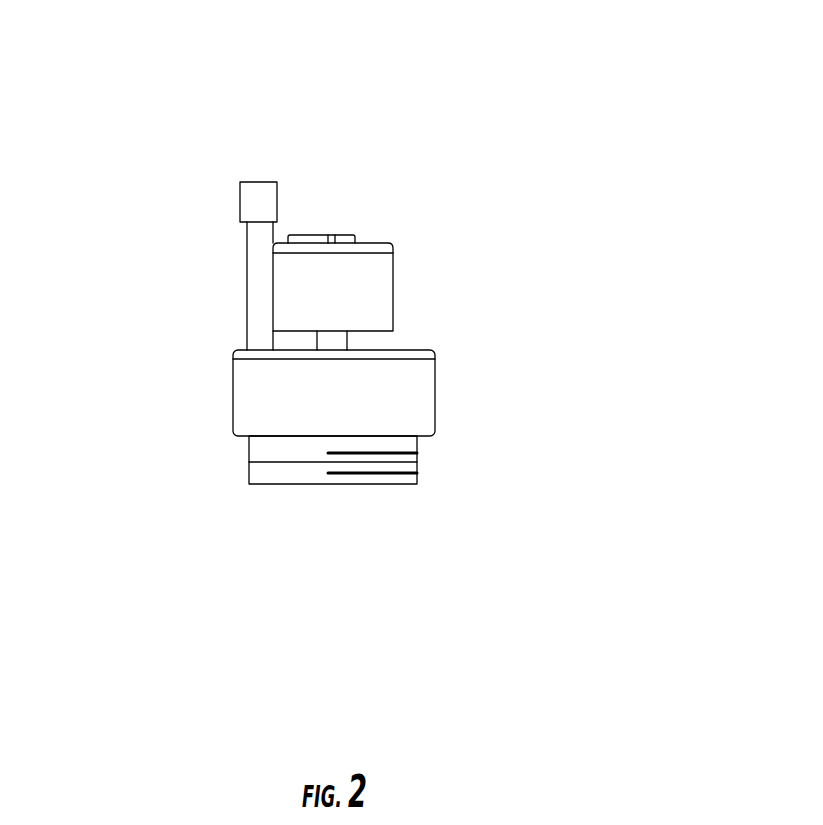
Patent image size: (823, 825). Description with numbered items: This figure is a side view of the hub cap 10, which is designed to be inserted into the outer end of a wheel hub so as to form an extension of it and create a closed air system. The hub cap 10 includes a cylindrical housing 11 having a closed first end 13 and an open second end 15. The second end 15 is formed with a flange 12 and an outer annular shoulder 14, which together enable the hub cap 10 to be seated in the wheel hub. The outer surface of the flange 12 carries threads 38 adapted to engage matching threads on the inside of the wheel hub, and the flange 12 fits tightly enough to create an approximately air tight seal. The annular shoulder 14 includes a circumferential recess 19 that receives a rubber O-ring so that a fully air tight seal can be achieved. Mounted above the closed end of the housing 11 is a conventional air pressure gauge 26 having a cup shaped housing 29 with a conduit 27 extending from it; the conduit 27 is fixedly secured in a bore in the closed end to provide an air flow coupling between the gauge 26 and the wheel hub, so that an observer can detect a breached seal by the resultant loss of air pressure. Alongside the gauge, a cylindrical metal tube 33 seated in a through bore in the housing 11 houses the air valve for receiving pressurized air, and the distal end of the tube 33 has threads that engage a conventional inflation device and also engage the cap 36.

The hub cap 10 is at (598, 80).
The cylindrical housing 11 is at (397, 399).
The flange 12 is at (262, 485).
The closed first end 13 is at (226, 345).
The outer annular shoulder 14 is at (248, 470).
The open second end 15 is at (328, 505).
The circumferential recess 19 is at (421, 436).
The air pressure gauge 26 is at (352, 284).
The conduit 27 is at (348, 340).
The cup shaped housing 29 is at (395, 240).
The cylindrical metal tube 33 is at (245, 277).
The cap 36 is at (252, 182).
The threads 38 is at (248, 457).